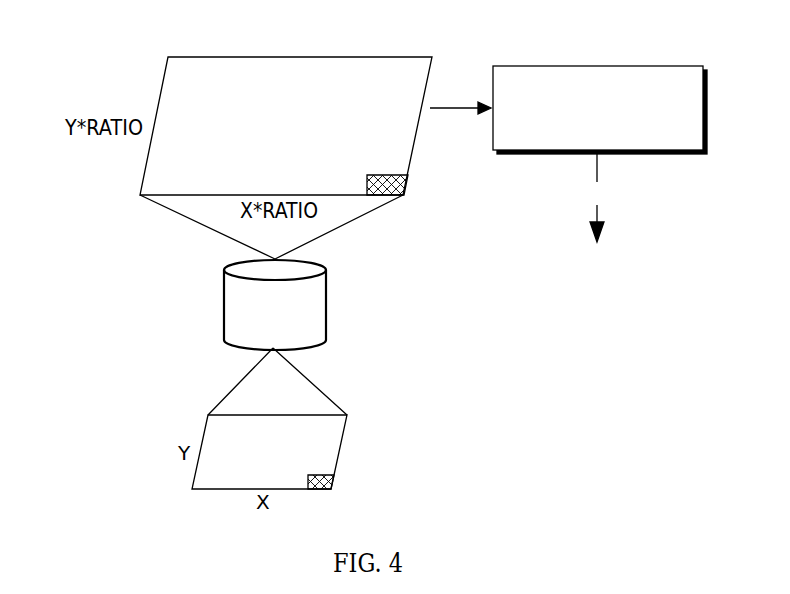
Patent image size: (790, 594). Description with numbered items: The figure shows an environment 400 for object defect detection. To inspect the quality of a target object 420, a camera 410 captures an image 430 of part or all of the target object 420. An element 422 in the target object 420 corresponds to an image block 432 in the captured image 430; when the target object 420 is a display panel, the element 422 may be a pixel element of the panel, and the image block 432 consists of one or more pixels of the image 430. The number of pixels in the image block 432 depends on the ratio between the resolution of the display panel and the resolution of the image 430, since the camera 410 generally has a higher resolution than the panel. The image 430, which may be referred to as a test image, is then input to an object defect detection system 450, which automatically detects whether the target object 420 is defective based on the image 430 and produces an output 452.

The environment for object defect detection 400 is at (116, 290).
The camera 410 is at (327, 305).
The target object 420 is at (343, 441).
The element 422 is at (334, 478).
The image 430 is at (162, 89).
The image block 432 is at (407, 186).
The object defect detection system 450 is at (567, 66).
The output of object defect detection system 452 is at (598, 196).